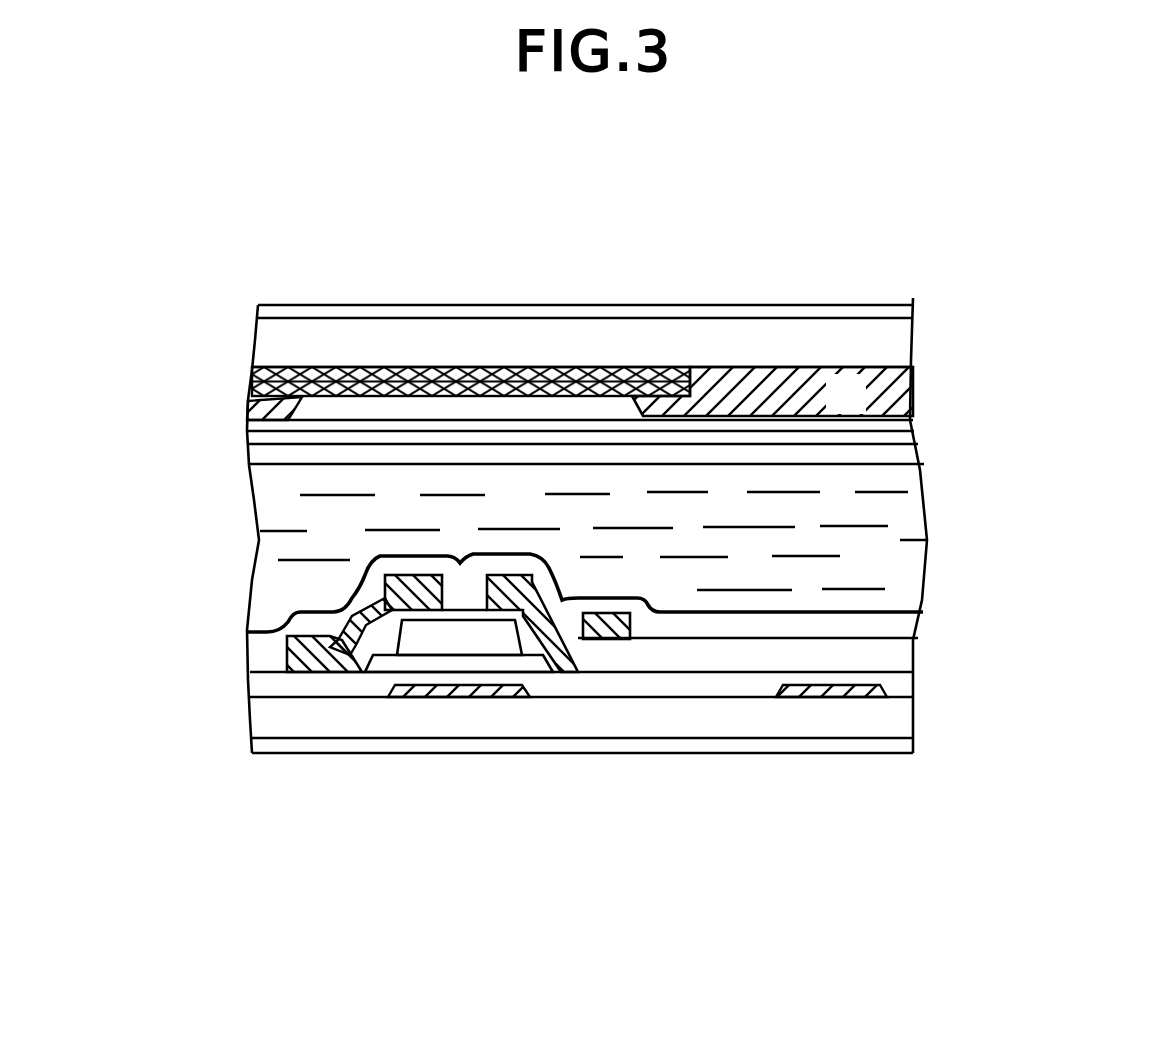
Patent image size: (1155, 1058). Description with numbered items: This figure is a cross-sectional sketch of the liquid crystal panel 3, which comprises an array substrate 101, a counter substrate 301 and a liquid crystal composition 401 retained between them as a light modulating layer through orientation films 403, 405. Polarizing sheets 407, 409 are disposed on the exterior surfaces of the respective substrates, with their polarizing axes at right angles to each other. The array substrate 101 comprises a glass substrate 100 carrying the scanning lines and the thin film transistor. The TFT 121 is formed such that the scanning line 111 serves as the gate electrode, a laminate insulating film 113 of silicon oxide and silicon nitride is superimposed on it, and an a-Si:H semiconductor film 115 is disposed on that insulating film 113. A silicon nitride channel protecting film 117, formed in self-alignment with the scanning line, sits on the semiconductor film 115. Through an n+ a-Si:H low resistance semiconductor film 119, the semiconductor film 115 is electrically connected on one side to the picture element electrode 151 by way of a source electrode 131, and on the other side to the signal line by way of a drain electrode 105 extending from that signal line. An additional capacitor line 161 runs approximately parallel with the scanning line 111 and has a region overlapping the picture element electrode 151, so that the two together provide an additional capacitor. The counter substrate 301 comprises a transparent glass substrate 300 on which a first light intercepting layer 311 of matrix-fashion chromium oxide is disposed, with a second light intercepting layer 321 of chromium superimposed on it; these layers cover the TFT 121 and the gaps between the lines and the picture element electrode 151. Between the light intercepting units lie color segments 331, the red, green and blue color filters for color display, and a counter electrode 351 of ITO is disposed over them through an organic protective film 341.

The liquid crystal panel 3 is at (928, 219).
The glass substrate 100 is at (836, 724).
The array substrate 101 is at (637, 719).
The drain electrode 105 is at (288, 645).
The scanning line 111 is at (490, 640).
The insulating film 113 is at (660, 690).
The semiconductor film 115 is at (433, 663).
The channel protecting film 117 is at (497, 680).
The low resistance semiconductor film 119 is at (357, 660).
The TFT 121 is at (380, 690).
The source electrode 131 is at (603, 641).
The picture element electrode 151 is at (737, 667).
The additional capacitor line 161 is at (892, 684).
The transparent glass substrate 300 is at (905, 333).
The counter substrate 301 is at (684, 354).
The first light intercepting layer 311 is at (470, 378).
The second light intercepting layer 321 is at (546, 372).
The color segments 331 is at (274, 404).
The organic protective film 341 is at (377, 410).
The counter electrode 351 is at (915, 431).
The liquid crystal composition 401 is at (878, 556).
The orientation film 403 is at (887, 623).
The orientation film 405 is at (877, 453).
The polarizing sheet 407 is at (906, 758).
The polarizing sheet 409 is at (880, 286).